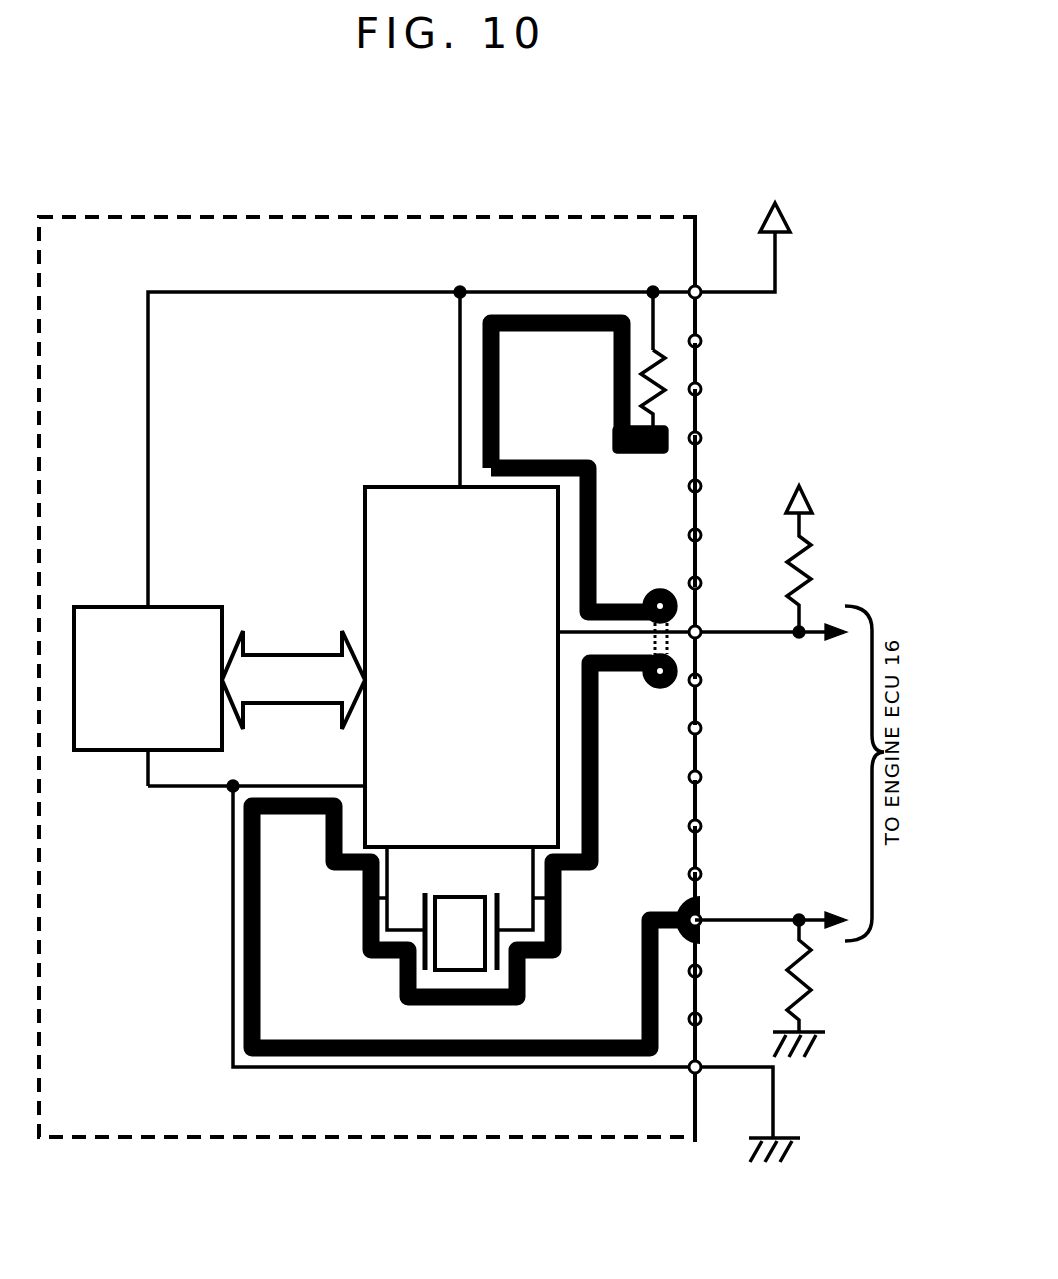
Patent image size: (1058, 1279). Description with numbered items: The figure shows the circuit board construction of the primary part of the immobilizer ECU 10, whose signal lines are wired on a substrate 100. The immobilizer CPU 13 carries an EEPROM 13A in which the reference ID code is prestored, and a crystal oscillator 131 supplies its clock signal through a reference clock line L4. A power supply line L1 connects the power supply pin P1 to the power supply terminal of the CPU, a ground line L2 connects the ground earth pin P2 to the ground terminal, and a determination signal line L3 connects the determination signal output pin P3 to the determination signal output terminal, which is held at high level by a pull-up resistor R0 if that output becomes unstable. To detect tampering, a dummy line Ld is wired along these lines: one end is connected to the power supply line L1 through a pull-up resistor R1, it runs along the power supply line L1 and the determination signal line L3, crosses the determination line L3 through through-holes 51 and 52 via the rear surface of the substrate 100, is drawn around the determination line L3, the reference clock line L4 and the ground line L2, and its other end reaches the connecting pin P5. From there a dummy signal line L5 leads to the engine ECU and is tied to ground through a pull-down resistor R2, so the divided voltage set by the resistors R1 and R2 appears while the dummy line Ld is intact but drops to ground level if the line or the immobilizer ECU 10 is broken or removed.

The immobilizer ECU 10 is at (367, 677).
The immobilizer CPU 13 is at (410, 487).
The EEPROM 13A is at (197, 607).
The crystal oscillator 131 is at (448, 896).
The substrate 100 is at (148, 1115).
The power supply line L1 is at (505, 292).
The ground line L2 is at (245, 950).
The determination signal line L3 is at (634, 658).
The reference clock line L4 is at (365, 913).
The dummy signal line L5 is at (784, 920).
The dummy line Ld is at (597, 510).
The power supply pin P1 is at (700, 285).
The ground earth pin P2 is at (700, 1060).
The determination signal output pin P3 is at (702, 636).
The dummy line connecting pin P5 is at (703, 905).
The pull-up resistor R0 is at (818, 560).
The pull-up resistor R1 is at (703, 390).
The pull-down resistor R2 is at (828, 985).
The through-hole 51 is at (683, 592).
The through-hole 52 is at (700, 697).